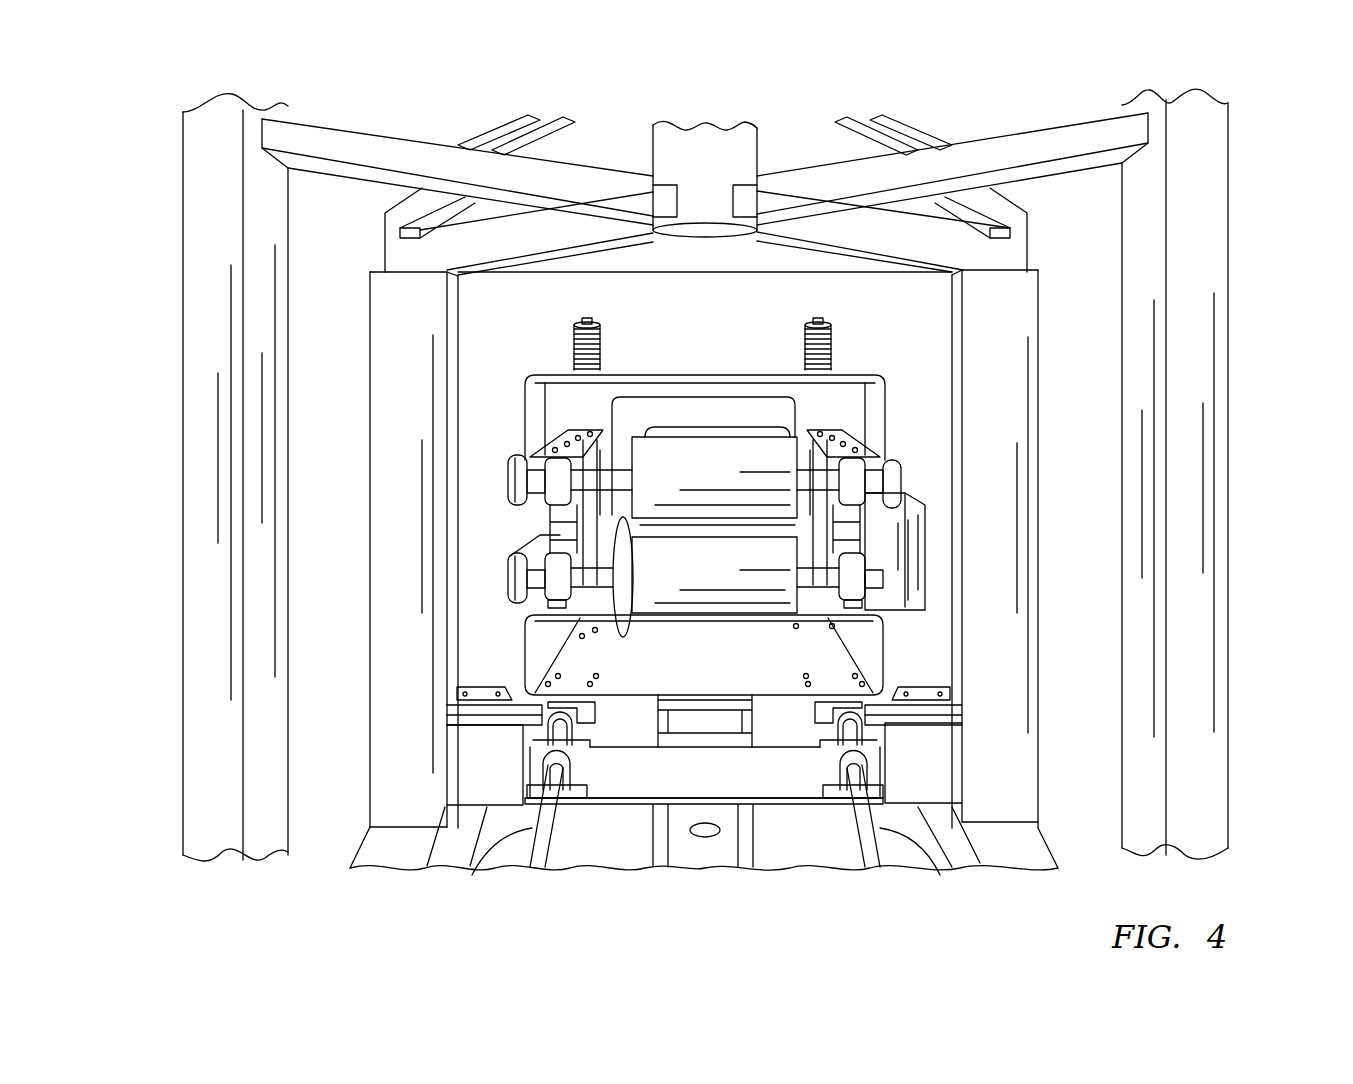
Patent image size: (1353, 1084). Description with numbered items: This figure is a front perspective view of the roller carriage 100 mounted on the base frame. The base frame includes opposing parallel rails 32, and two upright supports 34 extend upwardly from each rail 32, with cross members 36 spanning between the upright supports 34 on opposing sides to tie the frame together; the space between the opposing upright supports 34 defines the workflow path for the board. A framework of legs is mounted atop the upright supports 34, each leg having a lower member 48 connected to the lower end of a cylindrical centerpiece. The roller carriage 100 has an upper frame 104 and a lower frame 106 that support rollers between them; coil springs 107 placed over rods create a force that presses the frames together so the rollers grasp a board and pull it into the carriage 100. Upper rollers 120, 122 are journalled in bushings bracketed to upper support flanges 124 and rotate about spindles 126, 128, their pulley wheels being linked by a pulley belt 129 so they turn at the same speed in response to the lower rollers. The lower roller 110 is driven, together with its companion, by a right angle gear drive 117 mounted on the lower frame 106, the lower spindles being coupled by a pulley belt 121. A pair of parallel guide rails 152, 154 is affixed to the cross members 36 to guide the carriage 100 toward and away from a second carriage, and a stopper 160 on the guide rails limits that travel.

The upright support 34 is at (183, 207).
The lower member 48 is at (831, 233).
The roller carriage 100 is at (932, 306).
The upper frame 104 is at (722, 355).
The coil spring 107 is at (577, 325).
The upper roller 122 is at (662, 488).
The upper roller 120 is at (698, 568).
The spindle 128 is at (805, 458).
The upper support flange 124 is at (548, 450).
The spindle 126 is at (880, 476).
The pulley belt 129 is at (508, 472).
The pulley belt 121 is at (508, 583).
The right angle gear drive 117 is at (927, 560).
The lower frame 106 is at (755, 680).
The rail 32 is at (482, 695).
The stopper 160 is at (543, 715).
The cross member 36 is at (482, 773).
The lower roller 110 is at (755, 593).
The guide rail 154 is at (472, 875).
The guide rail 152 is at (940, 875).